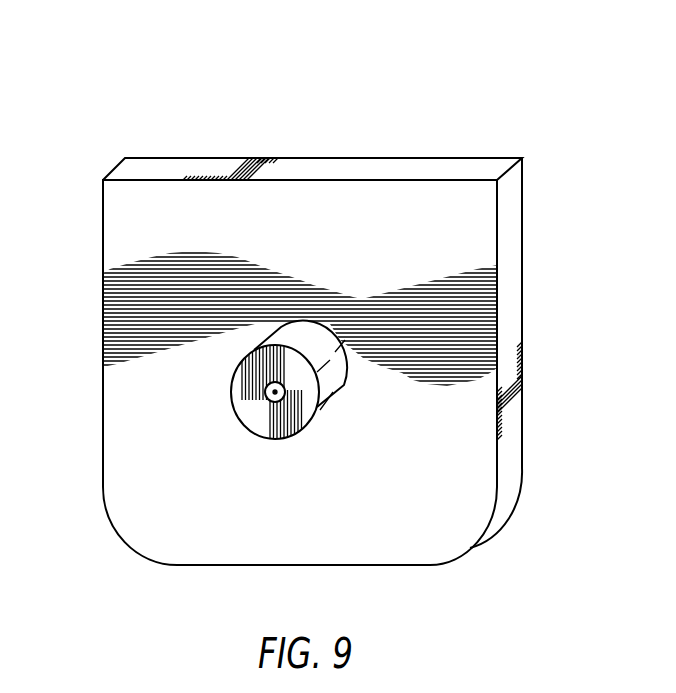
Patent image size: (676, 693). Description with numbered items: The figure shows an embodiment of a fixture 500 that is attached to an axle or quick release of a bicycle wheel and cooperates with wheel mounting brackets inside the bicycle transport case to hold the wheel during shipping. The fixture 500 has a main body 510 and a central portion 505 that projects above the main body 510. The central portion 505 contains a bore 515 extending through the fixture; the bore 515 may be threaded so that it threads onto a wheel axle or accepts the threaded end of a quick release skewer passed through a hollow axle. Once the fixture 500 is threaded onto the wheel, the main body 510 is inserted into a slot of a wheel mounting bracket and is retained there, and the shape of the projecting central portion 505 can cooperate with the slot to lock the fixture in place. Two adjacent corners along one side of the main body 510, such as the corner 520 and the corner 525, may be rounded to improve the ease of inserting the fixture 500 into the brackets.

The fixture 500 is at (382, 128).
The central portion 505 is at (330, 400).
The main body 510 is at (508, 311).
The bore 515 is at (270, 392).
The corner 520 is at (470, 548).
The rounded corner 525 is at (131, 546).